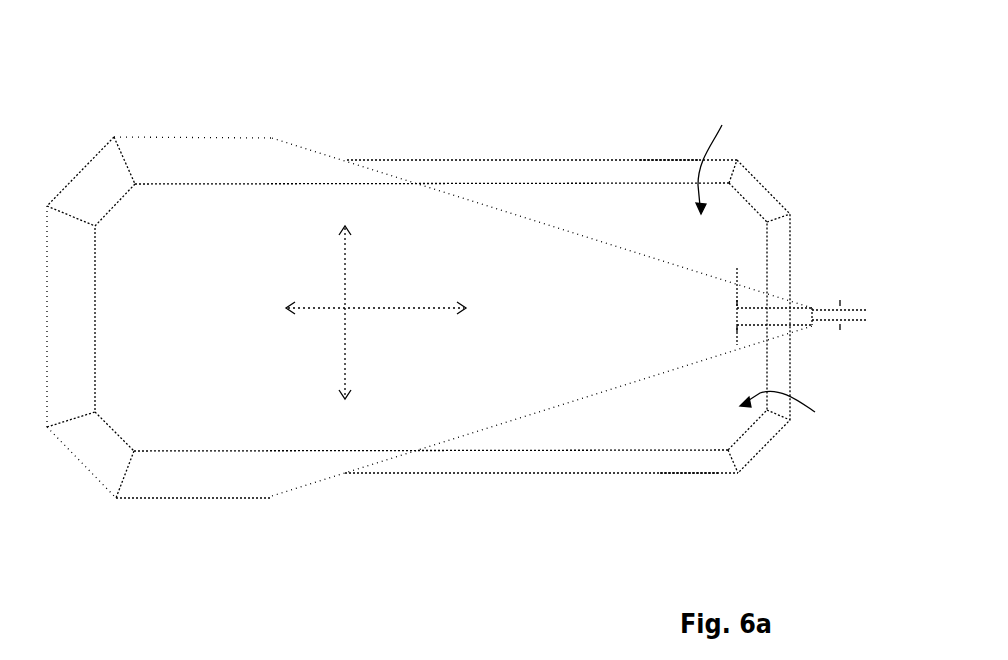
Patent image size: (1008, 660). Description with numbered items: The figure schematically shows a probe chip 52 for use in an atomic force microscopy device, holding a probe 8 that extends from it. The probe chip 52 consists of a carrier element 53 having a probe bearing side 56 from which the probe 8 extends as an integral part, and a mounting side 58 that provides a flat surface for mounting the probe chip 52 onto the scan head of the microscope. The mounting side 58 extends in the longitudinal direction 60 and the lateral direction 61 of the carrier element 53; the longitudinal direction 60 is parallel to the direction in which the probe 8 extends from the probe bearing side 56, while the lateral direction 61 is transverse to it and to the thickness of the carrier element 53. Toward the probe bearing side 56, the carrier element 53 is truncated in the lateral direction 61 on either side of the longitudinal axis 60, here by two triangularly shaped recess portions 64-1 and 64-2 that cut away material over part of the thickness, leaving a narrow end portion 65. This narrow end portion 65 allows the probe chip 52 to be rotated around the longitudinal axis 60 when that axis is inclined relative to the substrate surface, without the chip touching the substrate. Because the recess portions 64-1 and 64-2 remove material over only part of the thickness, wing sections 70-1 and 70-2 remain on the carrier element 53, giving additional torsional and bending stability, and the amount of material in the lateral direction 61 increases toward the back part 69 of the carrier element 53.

The probe 8 is at (852, 305).
The probe chip 52 is at (463, 475).
The carrier element 53 is at (608, 158).
The probe bearing side 56 is at (790, 243).
The mounting side 58 is at (204, 296).
The longitudinal direction 60 is at (391, 306).
The lateral direction 61 is at (345, 272).
The recess portion 64-1 is at (733, 155).
The recess portion 64-2 is at (812, 407).
The narrow end portion 65 is at (802, 328).
The back part 69 is at (203, 422).
The wing section 70-1 is at (666, 202).
The wing section 70-2 is at (695, 430).